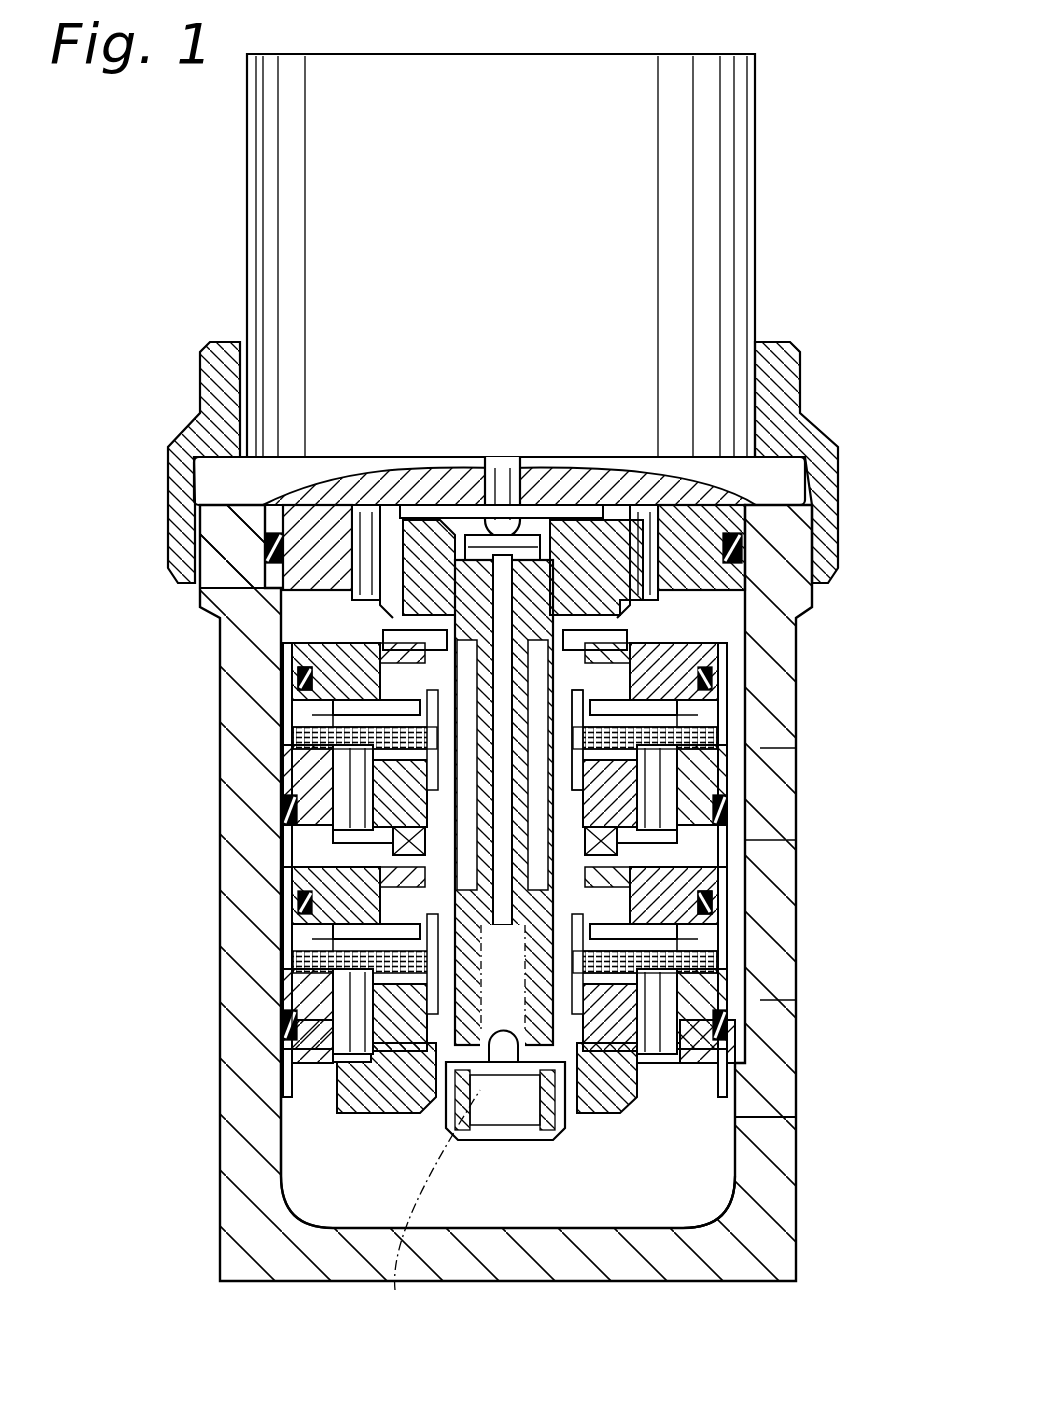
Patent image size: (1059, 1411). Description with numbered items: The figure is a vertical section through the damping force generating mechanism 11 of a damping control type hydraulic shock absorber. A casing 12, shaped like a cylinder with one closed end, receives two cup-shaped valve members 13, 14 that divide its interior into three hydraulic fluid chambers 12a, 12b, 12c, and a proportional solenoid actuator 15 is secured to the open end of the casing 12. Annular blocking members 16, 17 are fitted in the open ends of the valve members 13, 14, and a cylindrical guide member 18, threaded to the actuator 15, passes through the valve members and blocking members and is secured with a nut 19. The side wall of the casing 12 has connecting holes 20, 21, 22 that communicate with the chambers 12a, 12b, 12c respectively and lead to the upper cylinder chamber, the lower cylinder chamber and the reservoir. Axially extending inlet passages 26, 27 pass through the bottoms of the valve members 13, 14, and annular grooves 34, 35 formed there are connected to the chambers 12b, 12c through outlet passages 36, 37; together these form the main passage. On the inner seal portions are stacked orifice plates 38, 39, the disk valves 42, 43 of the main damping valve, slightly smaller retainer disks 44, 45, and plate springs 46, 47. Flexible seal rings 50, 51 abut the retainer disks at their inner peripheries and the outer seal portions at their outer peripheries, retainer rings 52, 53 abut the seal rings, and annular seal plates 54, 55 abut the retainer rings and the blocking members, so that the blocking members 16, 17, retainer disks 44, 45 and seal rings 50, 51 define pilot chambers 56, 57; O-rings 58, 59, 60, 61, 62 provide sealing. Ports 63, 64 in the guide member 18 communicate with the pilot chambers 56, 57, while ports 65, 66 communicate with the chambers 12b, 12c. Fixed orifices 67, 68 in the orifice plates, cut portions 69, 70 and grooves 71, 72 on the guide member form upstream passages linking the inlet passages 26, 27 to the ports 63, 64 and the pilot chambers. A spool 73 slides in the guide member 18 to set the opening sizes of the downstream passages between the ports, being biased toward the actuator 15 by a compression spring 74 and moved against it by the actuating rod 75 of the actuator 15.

The damping force generating mechanism 11 is at (690, 42).
The casing 12 is at (305, 1245).
The hydraulic fluid chamber 12a is at (485, 1205).
The hydraulic fluid chamber 12b is at (285, 905).
The hydraulic fluid chamber 12c is at (290, 628).
The valve member 13 is at (350, 1105).
The valve member 14 is at (330, 838).
The proportional solenoid actuator 15 is at (330, 188).
The blocking member 16 is at (286, 893).
The blocking member 17 is at (300, 668).
The cylindrical guide member 18 is at (600, 1105).
The nut 19 is at (640, 1030).
The connecting hole 20 is at (700, 1230).
The connecting hole 21 is at (762, 1000).
The connecting hole 22 is at (762, 748).
The hydraulic fluid passage 26 is at (450, 1150).
The hydraulic fluid passage 27 is at (380, 858).
The annular groove 34 is at (290, 1035).
The annular groove 35 is at (330, 780).
The hydraulic fluid passage 36 is at (300, 1005).
The hydraulic fluid passage 37 is at (345, 745).
The orifice plate 38 is at (340, 1072).
The orifice plate 39 is at (320, 812).
The disk valve 42 is at (700, 1025).
The disk valve 43 is at (700, 772).
The retainer disk 44 is at (340, 936).
The retainer disk 45 is at (340, 712).
The plate spring 46 is at (330, 945).
The plate spring 47 is at (330, 698).
The flexible seal ring 50 is at (700, 980).
The flexible seal ring 51 is at (700, 760).
The retainer ring 52 is at (720, 958).
The retainer ring 53 is at (690, 735).
The seal plate 54 is at (700, 932).
The seal plate 55 is at (690, 708).
The pilot chamber 56 is at (700, 895).
The pilot chamber 57 is at (700, 668).
The O-ring 58 is at (665, 1060).
The O-ring 59 is at (700, 907).
The O-ring 60 is at (700, 815).
The O-ring 61 is at (690, 650).
The O-ring 62 is at (745, 545).
The port 63 is at (700, 866).
The port 64 is at (622, 614).
The port 65 is at (690, 855).
The port 66 is at (745, 595).
The fixed orifice 67 is at (620, 1108).
The fixed orifice 68 is at (760, 785).
The cut portion 69 is at (600, 1150).
The cut portion 70 is at (745, 840).
The groove 71 is at (740, 1190).
The groove 72 is at (600, 635).
The spool 73 is at (300, 598).
The compression spring 74 is at (427, 1210).
The actuating rod 75 is at (495, 470).